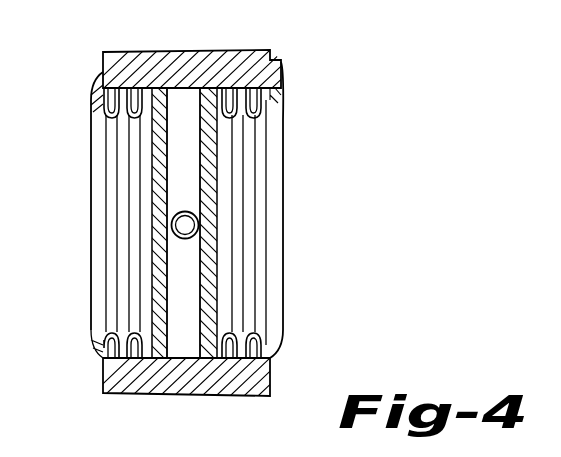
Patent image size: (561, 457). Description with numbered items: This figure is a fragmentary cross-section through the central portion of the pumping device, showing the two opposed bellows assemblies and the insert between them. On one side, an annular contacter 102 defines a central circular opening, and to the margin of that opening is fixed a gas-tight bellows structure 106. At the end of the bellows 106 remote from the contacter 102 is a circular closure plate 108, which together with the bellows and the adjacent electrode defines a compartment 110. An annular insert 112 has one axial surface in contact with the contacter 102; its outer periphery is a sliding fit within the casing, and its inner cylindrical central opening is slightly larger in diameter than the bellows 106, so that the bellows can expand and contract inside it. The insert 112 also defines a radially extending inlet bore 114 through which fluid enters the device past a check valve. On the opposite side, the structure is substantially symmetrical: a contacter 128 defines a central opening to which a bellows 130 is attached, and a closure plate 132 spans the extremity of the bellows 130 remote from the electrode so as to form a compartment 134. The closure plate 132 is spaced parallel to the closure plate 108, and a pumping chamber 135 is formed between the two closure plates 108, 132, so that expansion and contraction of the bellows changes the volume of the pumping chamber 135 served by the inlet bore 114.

The annular contacter 102 is at (272, 358).
The gas-tight bellows structure 106 is at (253, 125).
The circular closure plate 108 is at (215, 228).
The compartment 110 is at (250, 190).
The annular insert 112 is at (213, 52).
The inlet bore 114 is at (185, 212).
The contacter 128 is at (100, 356).
The bellows 130 is at (118, 130).
The closure plate 132 is at (160, 293).
The compartment 134 is at (120, 160).
The pumping chamber 135 is at (201, 281).